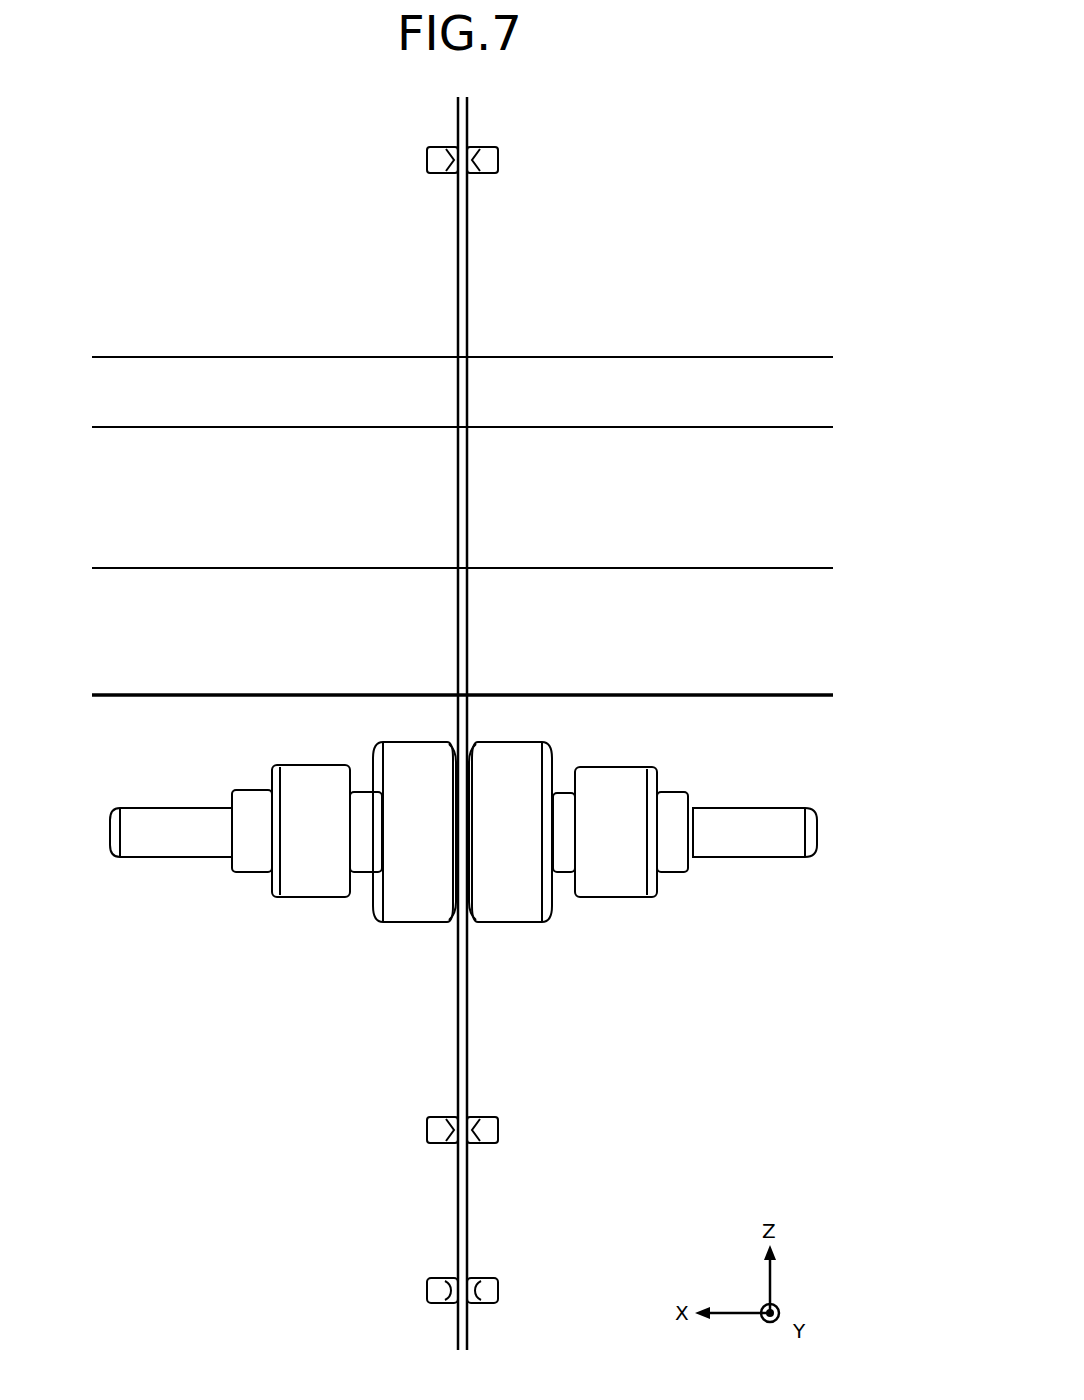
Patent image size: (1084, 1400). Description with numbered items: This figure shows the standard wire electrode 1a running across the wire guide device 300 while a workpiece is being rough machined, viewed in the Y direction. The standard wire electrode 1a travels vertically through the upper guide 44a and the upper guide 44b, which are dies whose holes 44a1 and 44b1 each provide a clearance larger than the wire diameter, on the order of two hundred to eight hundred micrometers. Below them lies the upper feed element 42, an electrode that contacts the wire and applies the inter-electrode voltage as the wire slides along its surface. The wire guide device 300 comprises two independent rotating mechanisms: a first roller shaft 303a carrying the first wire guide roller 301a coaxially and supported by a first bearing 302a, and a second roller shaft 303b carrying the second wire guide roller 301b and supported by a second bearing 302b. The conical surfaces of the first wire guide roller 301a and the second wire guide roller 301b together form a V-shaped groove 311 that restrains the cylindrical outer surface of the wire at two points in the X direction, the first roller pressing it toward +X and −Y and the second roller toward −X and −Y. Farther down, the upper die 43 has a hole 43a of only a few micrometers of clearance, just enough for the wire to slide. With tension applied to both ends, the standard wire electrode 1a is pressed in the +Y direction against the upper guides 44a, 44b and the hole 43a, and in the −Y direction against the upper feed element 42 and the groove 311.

The standard wire electrode 1a is at (468, 252).
The upper feed element 42 is at (818, 486).
The upper die 43 is at (490, 1290).
The hole 43a is at (448, 1290).
The upper guide 44a is at (490, 160).
The hole 44a1 is at (448, 160).
The upper guide 44b is at (490, 1130).
The hole 44b1 is at (448, 1130).
The wire guide device 300 is at (903, 829).
The V-shaped groove 311 is at (484, 723).
The first wire guide roller 301a is at (510, 908).
The second wire guide roller 301b is at (405, 908).
The first bearing 302a is at (608, 880).
The second bearing 302b is at (310, 878).
The first roller shaft 303a is at (745, 838).
The second roller shaft 303b is at (170, 838).